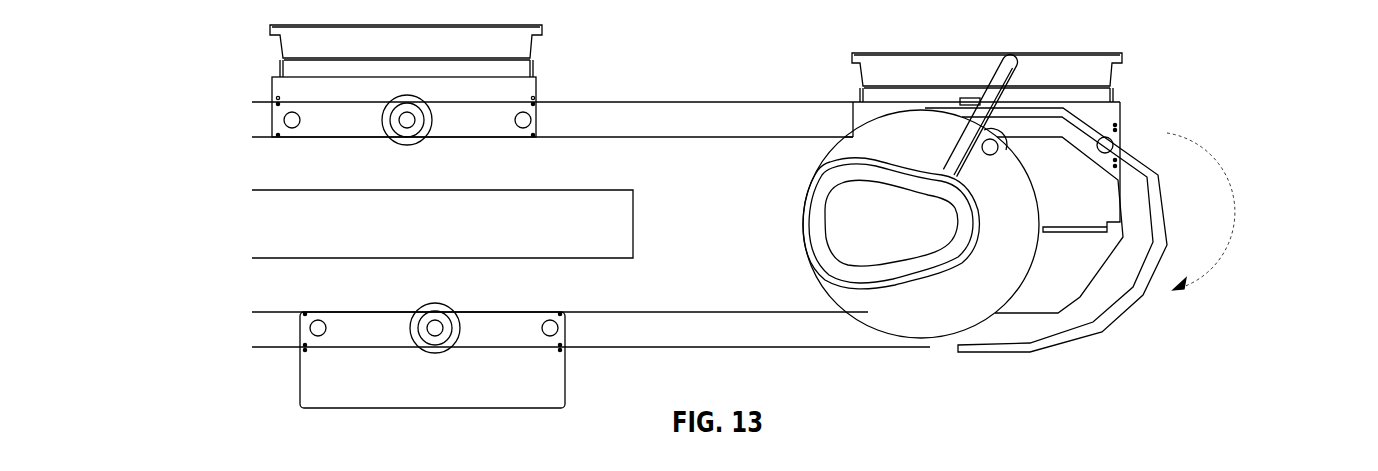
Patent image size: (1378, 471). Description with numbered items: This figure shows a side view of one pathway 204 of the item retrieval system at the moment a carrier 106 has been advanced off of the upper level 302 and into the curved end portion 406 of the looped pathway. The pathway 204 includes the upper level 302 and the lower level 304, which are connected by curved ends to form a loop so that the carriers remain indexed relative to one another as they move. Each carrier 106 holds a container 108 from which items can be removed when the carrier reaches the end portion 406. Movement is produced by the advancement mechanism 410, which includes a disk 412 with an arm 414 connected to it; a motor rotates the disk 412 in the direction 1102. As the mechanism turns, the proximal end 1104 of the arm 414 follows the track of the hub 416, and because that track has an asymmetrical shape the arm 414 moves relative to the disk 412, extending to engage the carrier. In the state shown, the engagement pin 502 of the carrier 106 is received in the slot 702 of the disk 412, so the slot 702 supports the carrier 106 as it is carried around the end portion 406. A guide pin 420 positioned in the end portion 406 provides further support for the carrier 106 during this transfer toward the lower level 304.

The carrier 106 is at (1120, 112).
The container 108 is at (1116, 70).
The pathway 204 is at (1240, 112).
The upper level 302 is at (252, 137).
The lower level 304 is at (258, 301).
The end portion 406 is at (1108, 331).
The advancement mechanism 410 is at (873, 326).
The disk 412 is at (873, 137).
The arm 414 is at (1000, 67).
The hub 416 is at (803, 234).
The guide pin 420 is at (1114, 145).
The engagement pin 502 is at (981, 146).
The slot 702 is at (1024, 162).
The direction 1102 is at (1240, 205).
The proximal end 1104 is at (944, 193).